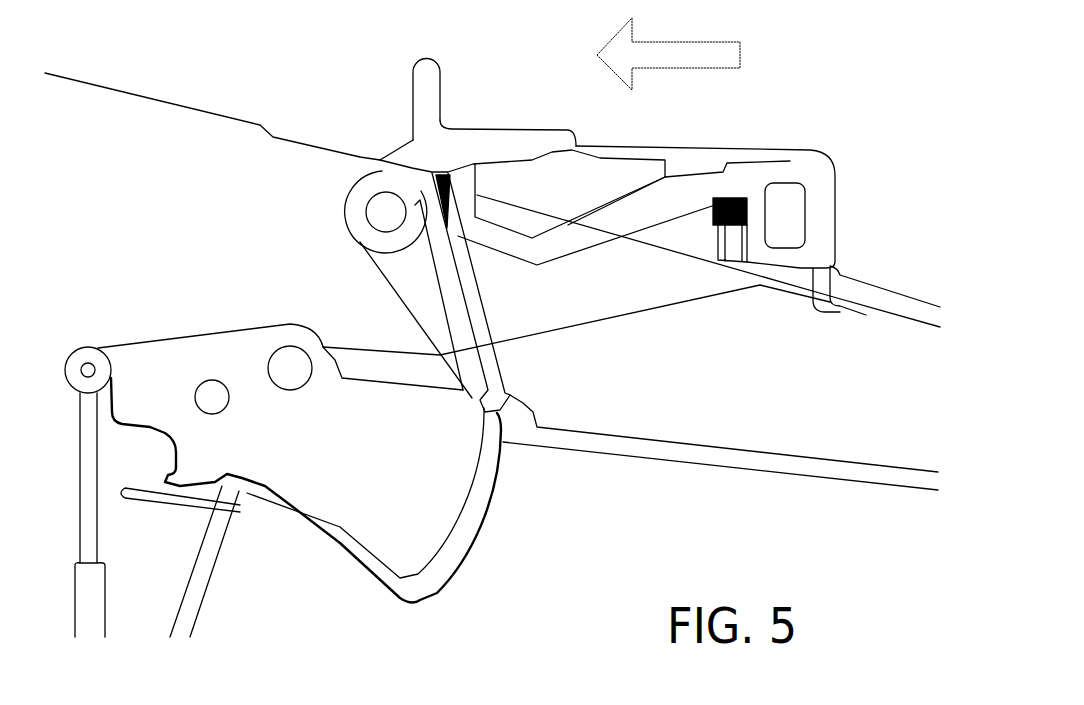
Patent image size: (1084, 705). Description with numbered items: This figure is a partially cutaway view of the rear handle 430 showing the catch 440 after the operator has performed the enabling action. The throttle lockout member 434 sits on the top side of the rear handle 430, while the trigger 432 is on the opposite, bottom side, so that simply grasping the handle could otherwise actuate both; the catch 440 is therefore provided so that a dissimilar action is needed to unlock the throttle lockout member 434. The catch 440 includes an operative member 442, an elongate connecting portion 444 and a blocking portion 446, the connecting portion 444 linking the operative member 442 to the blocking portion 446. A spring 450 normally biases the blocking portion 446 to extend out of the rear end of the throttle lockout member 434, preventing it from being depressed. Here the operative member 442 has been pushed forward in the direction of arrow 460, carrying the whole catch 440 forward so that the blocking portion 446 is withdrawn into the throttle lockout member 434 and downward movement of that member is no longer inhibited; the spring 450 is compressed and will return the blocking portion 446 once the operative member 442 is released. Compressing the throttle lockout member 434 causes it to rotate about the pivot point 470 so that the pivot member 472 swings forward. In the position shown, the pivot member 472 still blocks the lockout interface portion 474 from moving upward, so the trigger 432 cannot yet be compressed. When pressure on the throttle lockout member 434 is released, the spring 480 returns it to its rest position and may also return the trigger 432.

The rear handle 430 is at (107, 132).
The trigger 432 is at (423, 538).
The throttle lockout member 434 is at (680, 158).
The catch 440 is at (499, 132).
The operative member 442 is at (420, 112).
The connecting portion 444 is at (537, 256).
The blocking portion 446 is at (813, 182).
The spring 450 is at (728, 226).
The arrow 460 is at (705, 50).
The pivot point 470 is at (382, 208).
The pivot member 472 is at (447, 309).
The lockout interface portion 474 is at (508, 410).
The spring 480 is at (600, 325).